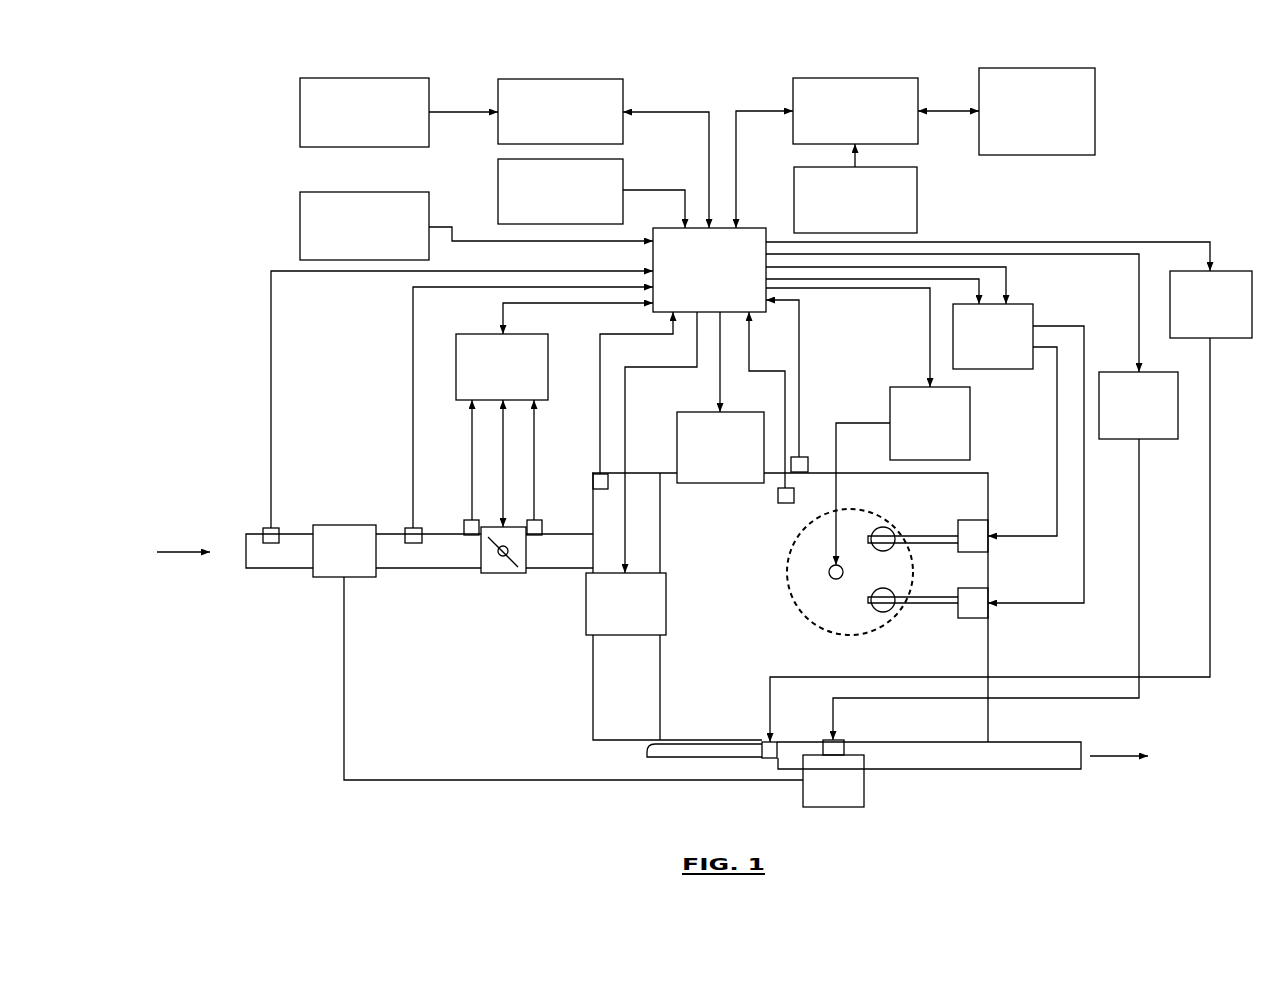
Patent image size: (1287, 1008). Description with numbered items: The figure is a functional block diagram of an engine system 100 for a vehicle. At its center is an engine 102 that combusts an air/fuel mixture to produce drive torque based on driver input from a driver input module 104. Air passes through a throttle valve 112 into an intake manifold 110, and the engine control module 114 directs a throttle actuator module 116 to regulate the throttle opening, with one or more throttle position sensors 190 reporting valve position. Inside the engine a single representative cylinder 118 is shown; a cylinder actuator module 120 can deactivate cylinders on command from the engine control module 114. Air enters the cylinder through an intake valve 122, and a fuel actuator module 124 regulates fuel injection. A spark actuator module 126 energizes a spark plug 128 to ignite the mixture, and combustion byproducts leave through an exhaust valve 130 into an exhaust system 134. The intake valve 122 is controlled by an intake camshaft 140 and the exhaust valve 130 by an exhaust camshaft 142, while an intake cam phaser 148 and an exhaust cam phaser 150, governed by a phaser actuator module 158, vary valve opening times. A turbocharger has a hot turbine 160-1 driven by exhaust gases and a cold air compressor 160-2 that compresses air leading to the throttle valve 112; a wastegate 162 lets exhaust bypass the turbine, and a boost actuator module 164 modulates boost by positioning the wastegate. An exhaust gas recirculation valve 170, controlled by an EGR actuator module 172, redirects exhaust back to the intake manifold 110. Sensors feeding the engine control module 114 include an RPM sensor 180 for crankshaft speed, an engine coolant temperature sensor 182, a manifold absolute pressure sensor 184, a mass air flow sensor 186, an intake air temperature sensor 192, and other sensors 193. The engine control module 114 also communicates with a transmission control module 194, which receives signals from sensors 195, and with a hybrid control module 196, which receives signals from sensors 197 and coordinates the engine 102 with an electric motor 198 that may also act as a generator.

The engine system 100 is at (220, 138).
The engine 102 is at (988, 478).
The driver input module 104 is at (498, 189).
The intake manifold 110 is at (593, 687).
The throttle valve 112 is at (500, 573).
The engine control module 114 is at (748, 228).
The throttle actuator module 116 is at (478, 334).
The cylinder 118 is at (815, 630).
The cylinder actuator module 120 is at (736, 412).
The intake valve 122 is at (886, 527).
The fuel actuator module 124 is at (643, 635).
The spark actuator module 126 is at (970, 420).
The spark plug 128 is at (829, 576).
The exhaust valve 130 is at (883, 612).
The exhaust system 134 is at (1053, 771).
The intake camshaft 140 is at (933, 536).
The exhaust camshaft 142 is at (935, 603).
The intake cam phaser 148 is at (970, 520).
The exhaust cam phaser 150 is at (975, 618).
The phaser actuator module 158 is at (1033, 316).
The hot turbine 160-1 is at (864, 785).
The cold air compressor 160-2 is at (332, 577).
The wastegate 162 is at (842, 742).
The boost actuator module 164 is at (1230, 338).
The exhaust gas recirculation valve 170 is at (768, 758).
The EGR actuator module 172 is at (1160, 439).
The RPM sensor 180 is at (805, 457).
The engine coolant temperature sensor 182 is at (784, 503).
The manifold absolute pressure sensor 184 is at (593, 474).
The mass air flow sensor 186 is at (410, 528).
The throttle position sensor 190 is at (470, 535).
The intake air temperature sensor 192 is at (268, 528).
The other sensors 193 is at (300, 211).
The transmission control module 194 is at (498, 103).
The sensors 195 is at (300, 97).
The hybrid control module 196 is at (918, 128).
The sensors 197 is at (917, 200).
The electric motor 198 is at (997, 155).